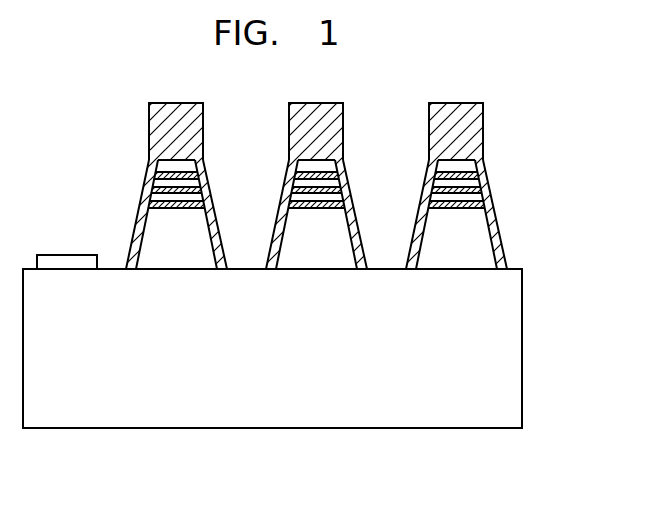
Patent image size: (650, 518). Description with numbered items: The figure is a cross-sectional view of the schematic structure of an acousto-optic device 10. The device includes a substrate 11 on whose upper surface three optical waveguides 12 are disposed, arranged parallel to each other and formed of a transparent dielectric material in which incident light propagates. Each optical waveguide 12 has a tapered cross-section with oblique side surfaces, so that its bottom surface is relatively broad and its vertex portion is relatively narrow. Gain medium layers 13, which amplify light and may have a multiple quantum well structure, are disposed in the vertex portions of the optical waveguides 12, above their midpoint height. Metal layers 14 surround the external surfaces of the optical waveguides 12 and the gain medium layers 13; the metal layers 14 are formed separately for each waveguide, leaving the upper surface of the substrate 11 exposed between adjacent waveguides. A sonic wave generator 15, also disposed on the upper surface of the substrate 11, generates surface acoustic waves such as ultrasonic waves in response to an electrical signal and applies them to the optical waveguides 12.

The acousto-optic device 10 is at (286, 493).
The substrate 11 is at (522, 350).
The optical waveguides 12 is at (485, 242).
The gain medium layers 13 is at (503, 172).
The metal layers 14 is at (482, 130).
The sonic wave generator 15 is at (67, 255).